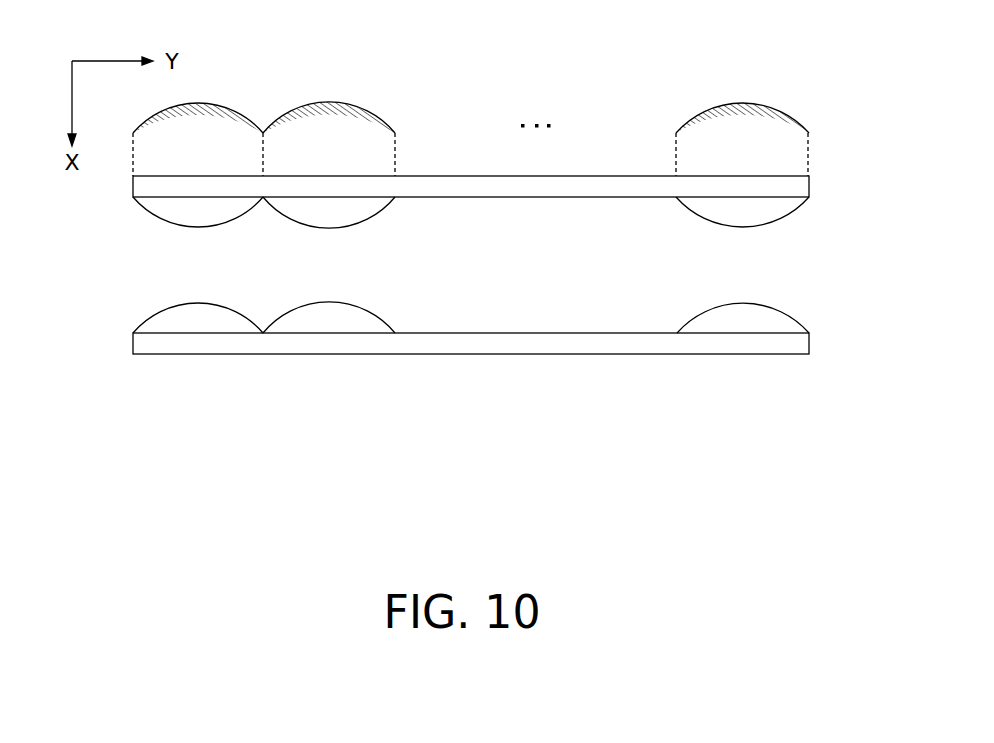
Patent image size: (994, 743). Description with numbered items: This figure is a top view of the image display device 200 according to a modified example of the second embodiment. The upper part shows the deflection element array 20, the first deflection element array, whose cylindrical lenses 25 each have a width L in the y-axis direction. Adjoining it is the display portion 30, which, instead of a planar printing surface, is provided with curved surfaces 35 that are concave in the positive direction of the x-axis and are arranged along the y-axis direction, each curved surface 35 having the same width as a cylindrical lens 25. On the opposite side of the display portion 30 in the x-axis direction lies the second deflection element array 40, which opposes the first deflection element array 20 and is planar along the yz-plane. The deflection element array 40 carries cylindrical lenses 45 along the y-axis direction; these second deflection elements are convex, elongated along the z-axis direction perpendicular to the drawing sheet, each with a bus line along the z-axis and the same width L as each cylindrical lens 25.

The image display device 200 is at (777, 66).
The deflection element array 20 is at (489, 192).
The cylindrical lenses 25 is at (200, 217).
The display portion 30 is at (330, 104).
The curved surfaces 35 is at (322, 117).
The deflection element array 40 is at (490, 345).
The cylindrical lenses 45 is at (200, 320).